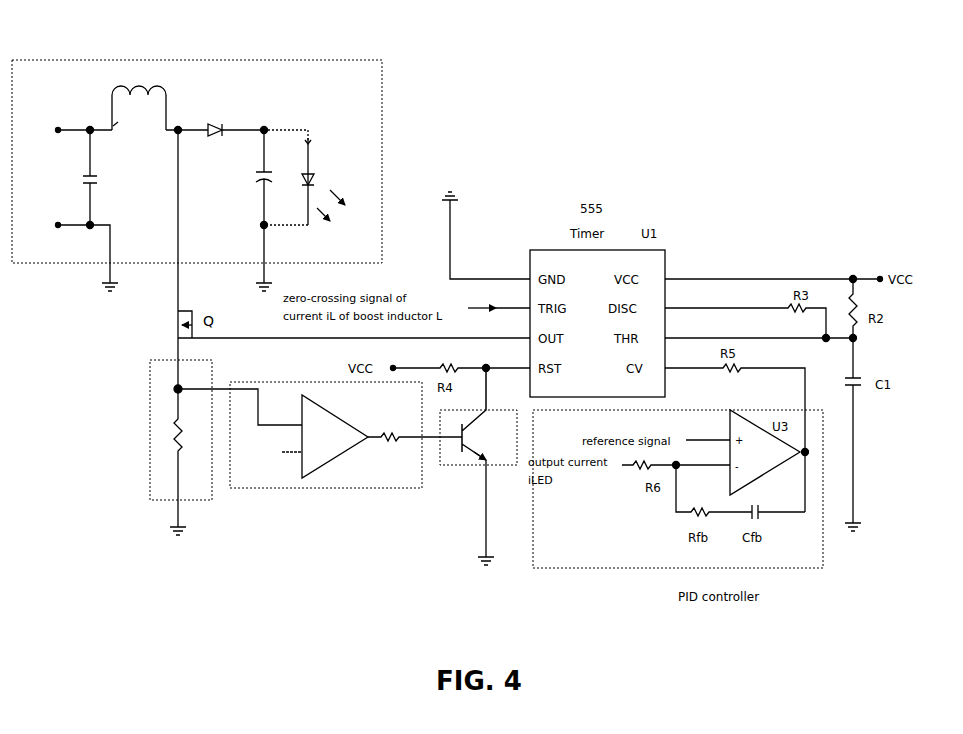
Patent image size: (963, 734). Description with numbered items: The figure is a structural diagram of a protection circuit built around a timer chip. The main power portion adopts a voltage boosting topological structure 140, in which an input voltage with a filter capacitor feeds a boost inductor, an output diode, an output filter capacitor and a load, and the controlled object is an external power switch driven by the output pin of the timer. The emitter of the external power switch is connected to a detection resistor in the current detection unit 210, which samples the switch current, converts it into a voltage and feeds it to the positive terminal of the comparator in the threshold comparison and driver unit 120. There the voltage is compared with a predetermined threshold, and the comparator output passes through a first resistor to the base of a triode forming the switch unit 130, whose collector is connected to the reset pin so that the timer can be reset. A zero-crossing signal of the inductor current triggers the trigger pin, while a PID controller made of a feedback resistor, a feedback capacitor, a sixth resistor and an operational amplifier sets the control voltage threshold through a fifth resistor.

The voltage boosting topological structure 140 is at (197, 161).
The current detection unit 210 is at (112, 447).
The threshold comparison and driver unit 120 is at (320, 458).
The switch unit 130 is at (478, 466).